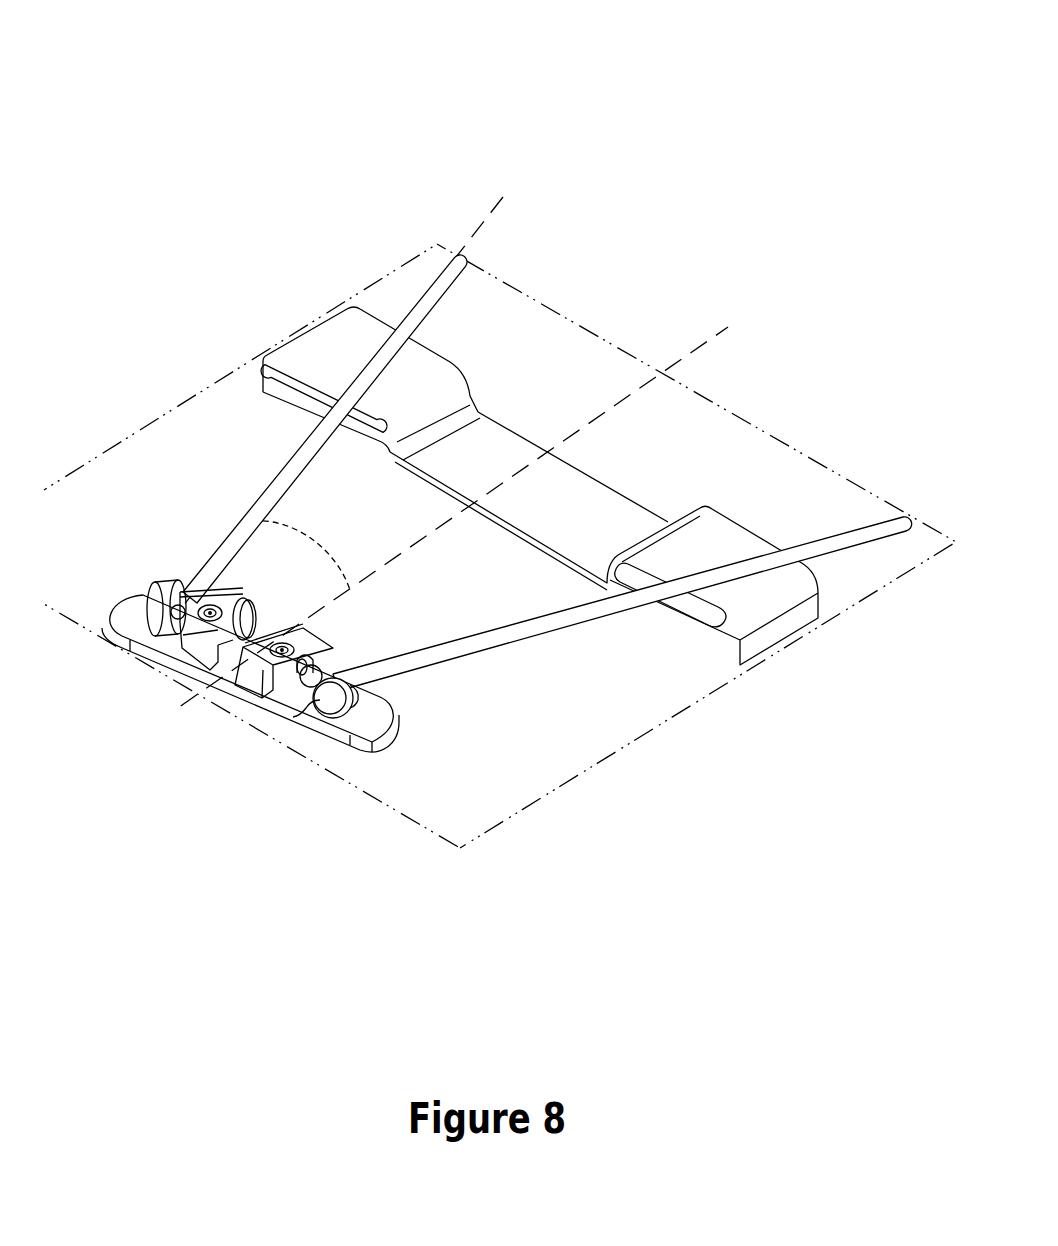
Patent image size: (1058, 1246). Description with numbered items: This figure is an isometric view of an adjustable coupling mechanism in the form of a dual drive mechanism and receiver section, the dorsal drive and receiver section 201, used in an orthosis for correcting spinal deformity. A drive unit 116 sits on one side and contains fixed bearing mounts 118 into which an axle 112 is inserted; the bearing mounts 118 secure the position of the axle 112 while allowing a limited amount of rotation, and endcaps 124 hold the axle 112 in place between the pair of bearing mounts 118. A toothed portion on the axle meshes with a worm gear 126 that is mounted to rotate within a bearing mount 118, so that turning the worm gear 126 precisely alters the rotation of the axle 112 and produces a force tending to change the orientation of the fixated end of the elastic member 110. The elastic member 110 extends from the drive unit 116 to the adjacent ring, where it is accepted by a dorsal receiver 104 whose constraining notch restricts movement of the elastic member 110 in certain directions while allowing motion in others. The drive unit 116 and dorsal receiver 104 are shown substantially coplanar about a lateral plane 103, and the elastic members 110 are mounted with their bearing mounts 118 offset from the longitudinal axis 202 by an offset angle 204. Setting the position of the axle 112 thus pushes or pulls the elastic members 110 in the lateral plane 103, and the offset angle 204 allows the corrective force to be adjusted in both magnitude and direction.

The lateral plane 103 is at (745, 410).
The dorsal receiver 104 is at (345, 370).
The elastic member 110 is at (487, 638).
The axle 112 is at (313, 667).
The drive unit 116 is at (132, 585).
The bearing mount 118 is at (200, 627).
The endcap 124 is at (333, 698).
The worm gear 126 is at (282, 653).
The dorsal drive and receiver section 201 is at (565, 124).
The longitudinal axis 202 is at (678, 357).
The offset angle 204 is at (307, 542).